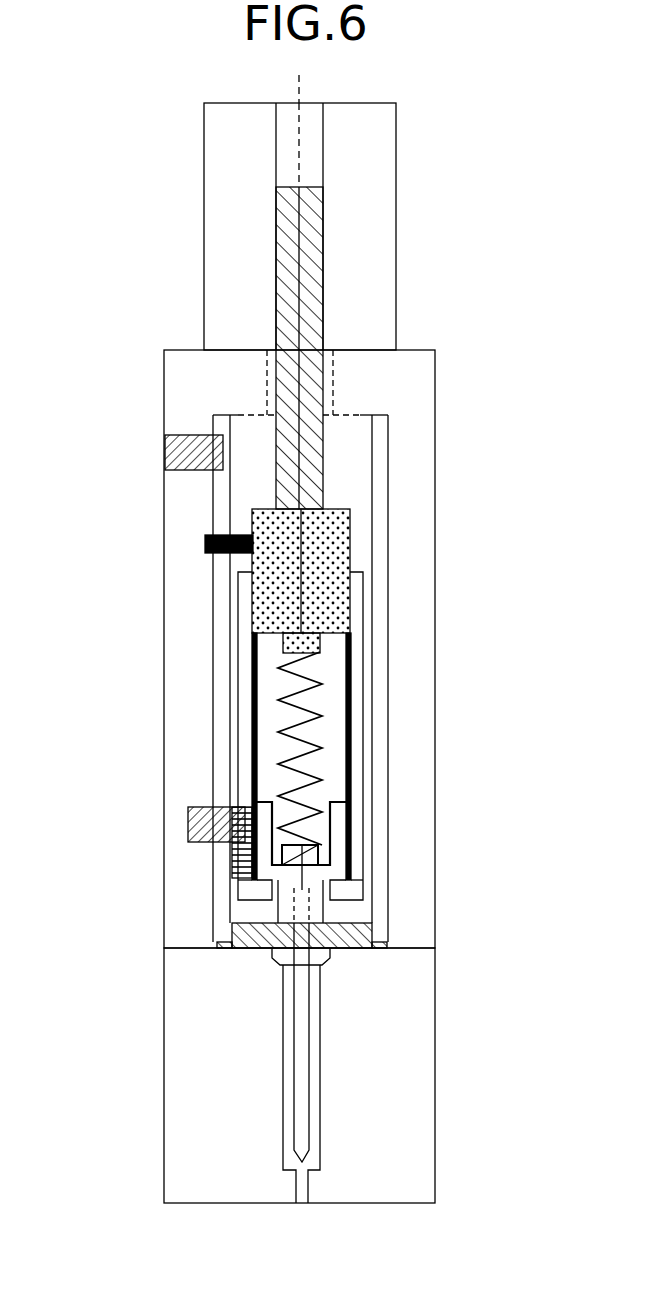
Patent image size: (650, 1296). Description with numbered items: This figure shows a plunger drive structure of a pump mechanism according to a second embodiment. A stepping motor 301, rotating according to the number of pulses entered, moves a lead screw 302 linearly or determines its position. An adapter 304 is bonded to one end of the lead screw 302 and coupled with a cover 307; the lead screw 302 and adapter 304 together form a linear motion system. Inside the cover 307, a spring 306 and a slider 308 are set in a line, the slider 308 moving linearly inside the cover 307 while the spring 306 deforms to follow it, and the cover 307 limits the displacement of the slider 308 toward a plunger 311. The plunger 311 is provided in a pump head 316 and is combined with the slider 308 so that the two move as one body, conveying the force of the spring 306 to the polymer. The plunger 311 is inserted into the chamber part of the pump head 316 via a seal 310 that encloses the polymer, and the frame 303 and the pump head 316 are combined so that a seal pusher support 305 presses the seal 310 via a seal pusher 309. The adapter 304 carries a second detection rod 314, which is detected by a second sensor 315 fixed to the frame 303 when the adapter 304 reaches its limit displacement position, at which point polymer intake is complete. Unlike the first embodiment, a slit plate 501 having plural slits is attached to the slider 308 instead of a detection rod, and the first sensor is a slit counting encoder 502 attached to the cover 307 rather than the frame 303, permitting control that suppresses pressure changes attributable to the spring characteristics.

The stepping motor 301 is at (377, 220).
The lead screw 302 is at (320, 318).
The frame 303 is at (415, 392).
The adapter 304 is at (337, 532).
The seal pusher support 305 is at (382, 598).
The spring 306 is at (320, 692).
The cover 307 is at (360, 815).
The slider 308 is at (335, 867).
The seal pusher 309 is at (380, 930).
The seal 310 is at (335, 953).
The plunger 311 is at (302, 1085).
The second detection rod 314 is at (207, 545).
The second sensor 315 is at (167, 447).
The pump head 316 is at (185, 1102).
The slit plate 501 is at (233, 857).
The slit counting encoder 502 is at (188, 817).